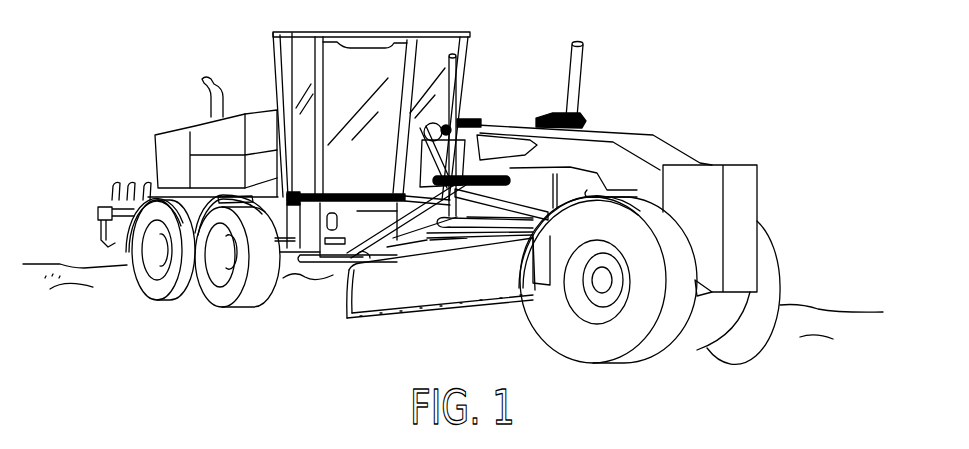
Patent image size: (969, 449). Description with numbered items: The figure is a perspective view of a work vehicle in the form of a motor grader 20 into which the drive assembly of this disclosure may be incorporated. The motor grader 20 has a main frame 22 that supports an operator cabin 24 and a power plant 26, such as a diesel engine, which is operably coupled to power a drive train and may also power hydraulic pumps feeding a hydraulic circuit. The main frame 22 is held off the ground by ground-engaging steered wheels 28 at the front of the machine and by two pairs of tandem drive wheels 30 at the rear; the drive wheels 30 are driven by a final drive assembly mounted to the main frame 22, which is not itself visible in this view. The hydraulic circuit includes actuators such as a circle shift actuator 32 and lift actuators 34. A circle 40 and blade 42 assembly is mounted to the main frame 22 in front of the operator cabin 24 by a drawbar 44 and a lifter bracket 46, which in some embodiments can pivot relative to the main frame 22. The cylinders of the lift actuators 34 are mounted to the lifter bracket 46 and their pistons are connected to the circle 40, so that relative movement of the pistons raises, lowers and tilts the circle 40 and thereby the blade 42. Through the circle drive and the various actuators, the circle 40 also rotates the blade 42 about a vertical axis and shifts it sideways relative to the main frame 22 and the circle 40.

The motor grader 20 is at (580, 19).
The main frame 22 is at (620, 133).
The operator cabin 24 is at (359, 33).
The power plant 26 is at (173, 147).
The ground-engaging steered wheels 28 is at (732, 340).
The tandem drive wheels 30 is at (222, 253).
The circle shift actuator 32 is at (505, 206).
The lift actuators 34 is at (567, 82).
The circle 40 is at (448, 255).
The blade 42 is at (380, 302).
The drawbar 44 is at (512, 235).
The lifter bracket 46 is at (430, 123).